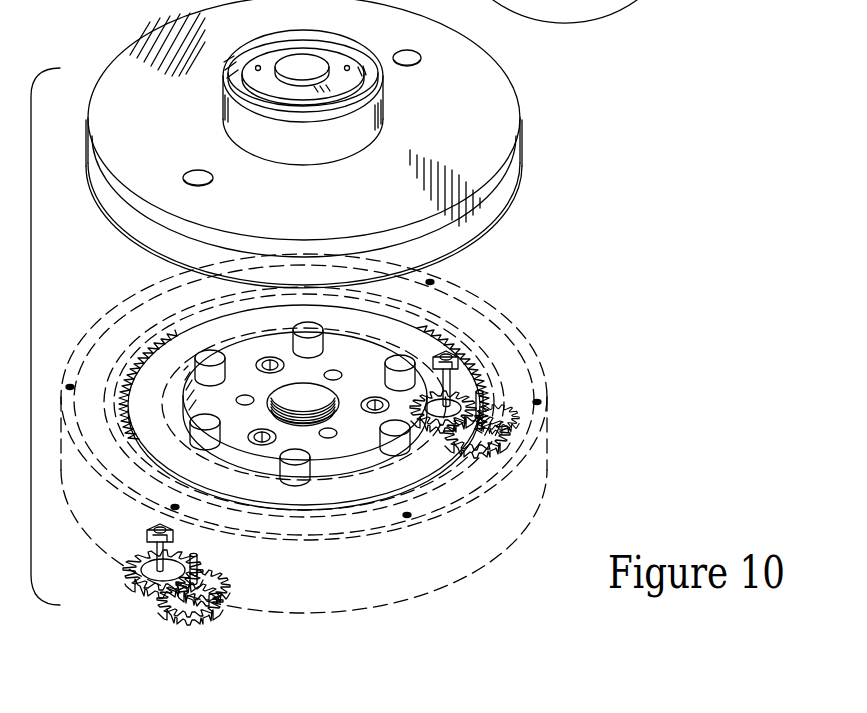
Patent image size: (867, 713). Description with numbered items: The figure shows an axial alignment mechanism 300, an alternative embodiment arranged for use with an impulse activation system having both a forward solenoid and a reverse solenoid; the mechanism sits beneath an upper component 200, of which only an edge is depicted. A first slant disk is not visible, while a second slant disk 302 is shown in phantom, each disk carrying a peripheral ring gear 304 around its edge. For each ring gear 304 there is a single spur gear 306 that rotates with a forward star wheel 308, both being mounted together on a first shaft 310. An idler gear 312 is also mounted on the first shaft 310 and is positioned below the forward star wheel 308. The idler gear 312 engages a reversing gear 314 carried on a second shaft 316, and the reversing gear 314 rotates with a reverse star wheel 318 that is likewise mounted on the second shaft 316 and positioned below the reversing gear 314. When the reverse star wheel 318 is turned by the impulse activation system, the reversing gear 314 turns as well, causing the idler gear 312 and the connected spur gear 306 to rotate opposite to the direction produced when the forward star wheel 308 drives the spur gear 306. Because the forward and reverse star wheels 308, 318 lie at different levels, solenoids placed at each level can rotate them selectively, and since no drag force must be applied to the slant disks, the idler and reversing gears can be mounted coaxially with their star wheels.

The upper housing 200 is at (653, 0).
The axial alignment mechanism 300 is at (627, 173).
The second slant disk 302 is at (113, 377).
The peripheral ring gear 304 is at (130, 365).
The spur gear 306 is at (150, 530).
The forward star wheel 308 is at (127, 563).
The first shaft 310 is at (147, 540).
The idler gear 312 is at (173, 560).
The reversing gear 314 is at (227, 587).
The second shaft 316 is at (200, 568).
The reverse star wheel 318 is at (203, 603).